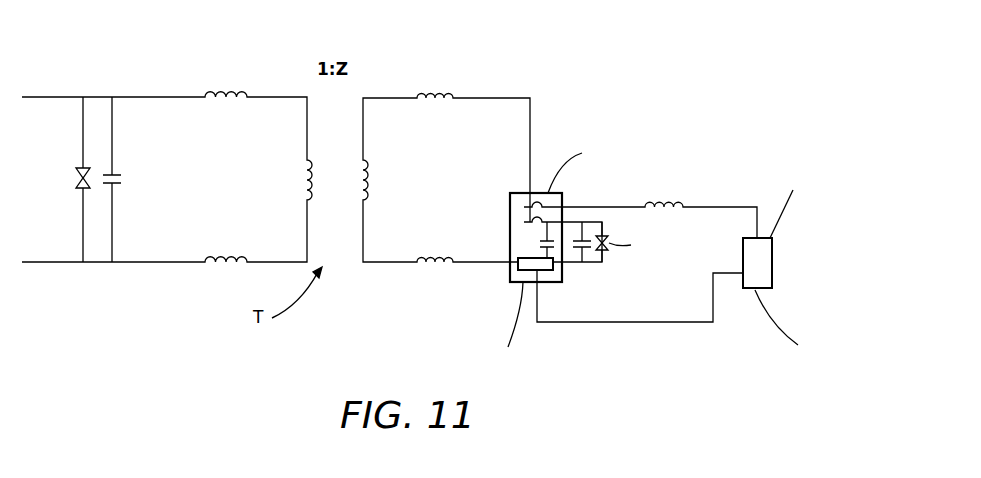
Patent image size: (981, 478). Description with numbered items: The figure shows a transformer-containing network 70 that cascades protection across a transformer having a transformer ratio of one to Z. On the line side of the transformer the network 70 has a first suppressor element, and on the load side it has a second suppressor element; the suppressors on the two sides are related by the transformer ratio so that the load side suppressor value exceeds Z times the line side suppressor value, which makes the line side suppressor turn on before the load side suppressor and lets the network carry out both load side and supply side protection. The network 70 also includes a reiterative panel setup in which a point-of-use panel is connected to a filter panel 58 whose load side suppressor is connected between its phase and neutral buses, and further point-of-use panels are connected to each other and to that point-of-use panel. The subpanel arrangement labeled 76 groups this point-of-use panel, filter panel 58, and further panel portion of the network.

The transformer-containing network 70 is at (272, 67).
The subpanel 76 is at (672, 177).
The filter panel 58 is at (575, 263).